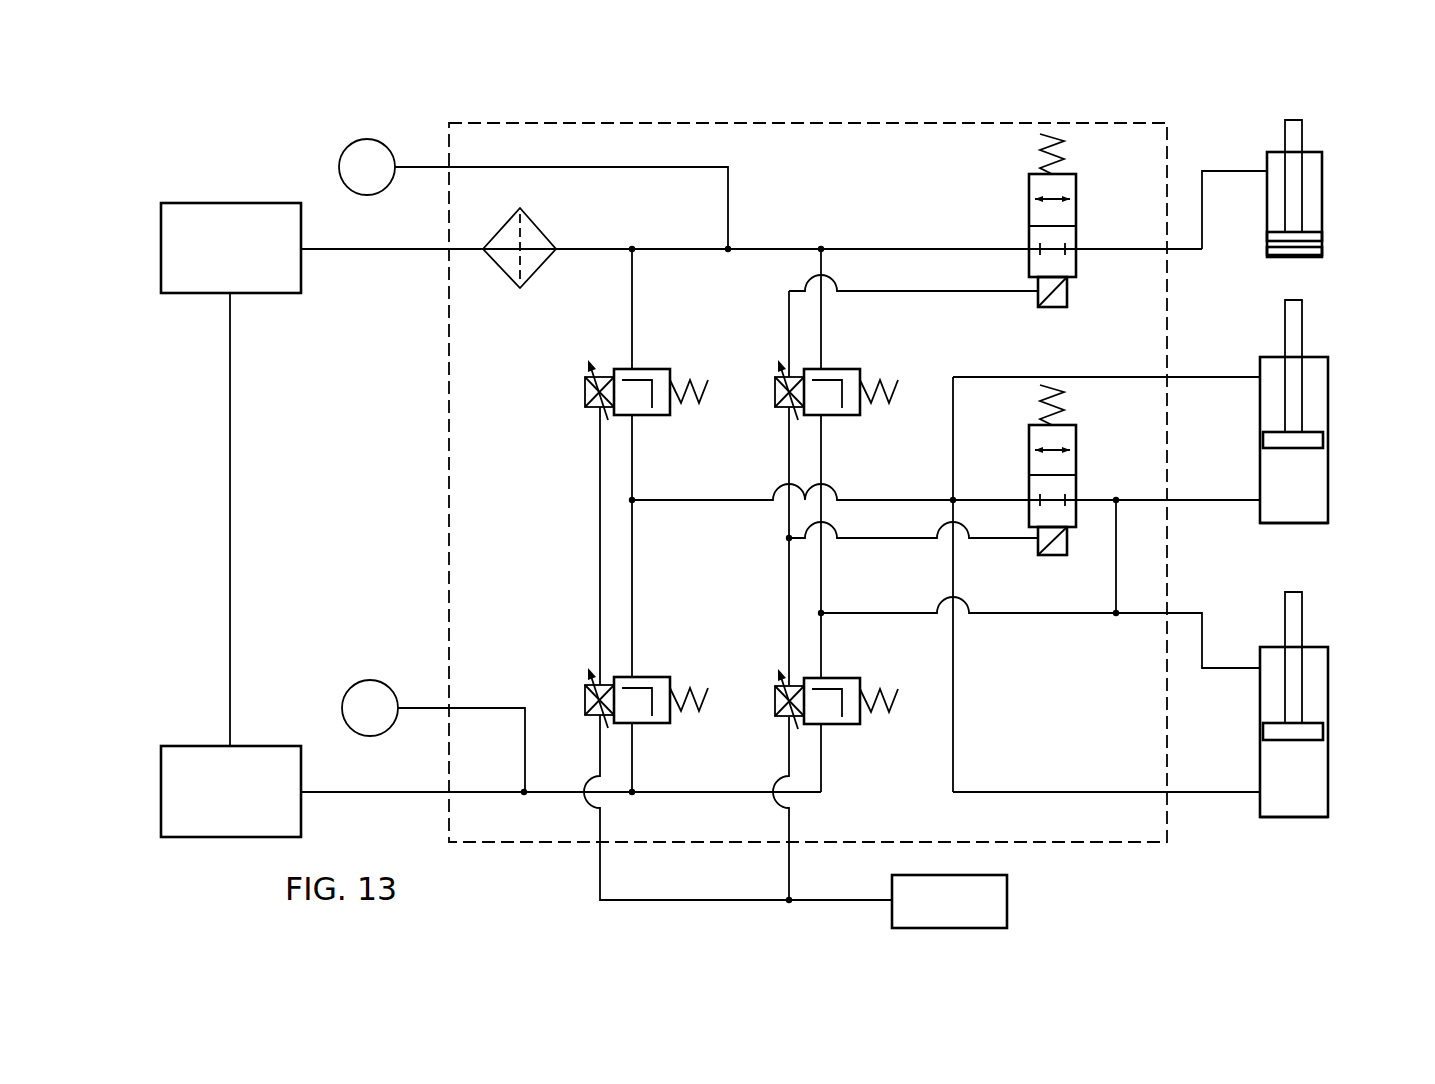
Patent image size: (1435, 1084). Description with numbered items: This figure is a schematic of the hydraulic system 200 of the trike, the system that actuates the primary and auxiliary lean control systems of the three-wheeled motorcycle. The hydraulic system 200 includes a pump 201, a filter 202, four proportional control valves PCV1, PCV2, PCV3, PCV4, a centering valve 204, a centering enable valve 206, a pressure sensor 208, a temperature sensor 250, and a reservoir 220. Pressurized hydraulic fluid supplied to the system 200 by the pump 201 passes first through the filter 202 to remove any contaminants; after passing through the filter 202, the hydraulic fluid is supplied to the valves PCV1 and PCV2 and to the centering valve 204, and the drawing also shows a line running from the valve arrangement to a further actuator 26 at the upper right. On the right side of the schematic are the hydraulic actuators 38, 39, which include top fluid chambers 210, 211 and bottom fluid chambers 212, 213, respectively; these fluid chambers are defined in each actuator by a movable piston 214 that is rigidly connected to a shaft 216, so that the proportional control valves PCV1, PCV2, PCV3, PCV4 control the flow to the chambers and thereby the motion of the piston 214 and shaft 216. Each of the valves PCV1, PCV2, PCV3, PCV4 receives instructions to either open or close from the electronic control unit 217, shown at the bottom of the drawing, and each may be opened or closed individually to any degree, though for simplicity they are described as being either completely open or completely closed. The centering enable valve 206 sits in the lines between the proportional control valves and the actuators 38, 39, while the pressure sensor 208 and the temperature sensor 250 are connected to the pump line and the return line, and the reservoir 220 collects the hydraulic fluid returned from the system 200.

The hydraulic system 200 is at (443, 125).
The pump 201 is at (215, 295).
The filter 202 is at (545, 228).
The centering valve 204 is at (1033, 228).
The centering enable valve 206 is at (1030, 468).
The pressure sensor 208 is at (343, 150).
The temperature sensor 250 is at (363, 680).
The electronic control unit 217 is at (1007, 897).
The reservoir 220 is at (215, 838).
The actuator 26 is at (1335, 240).
The hydraulic actuator 38 is at (1271, 456).
The hydraulic actuator 39 is at (1194, 758).
The top fluid chamber 210 is at (1318, 392).
The top fluid chamber 211 is at (1318, 692).
The bottom fluid chamber 212 is at (1318, 502).
The bottom fluid chamber 213 is at (1318, 802).
The movable piston 214 is at (1323, 440).
The shaft 216 is at (1298, 338).
The proportional control valve PCV1 is at (643, 369).
The proportional control valve PCV2 is at (843, 369).
The proportional control valve PCV3 is at (643, 677).
The proportional control valve PCV4 is at (843, 678).